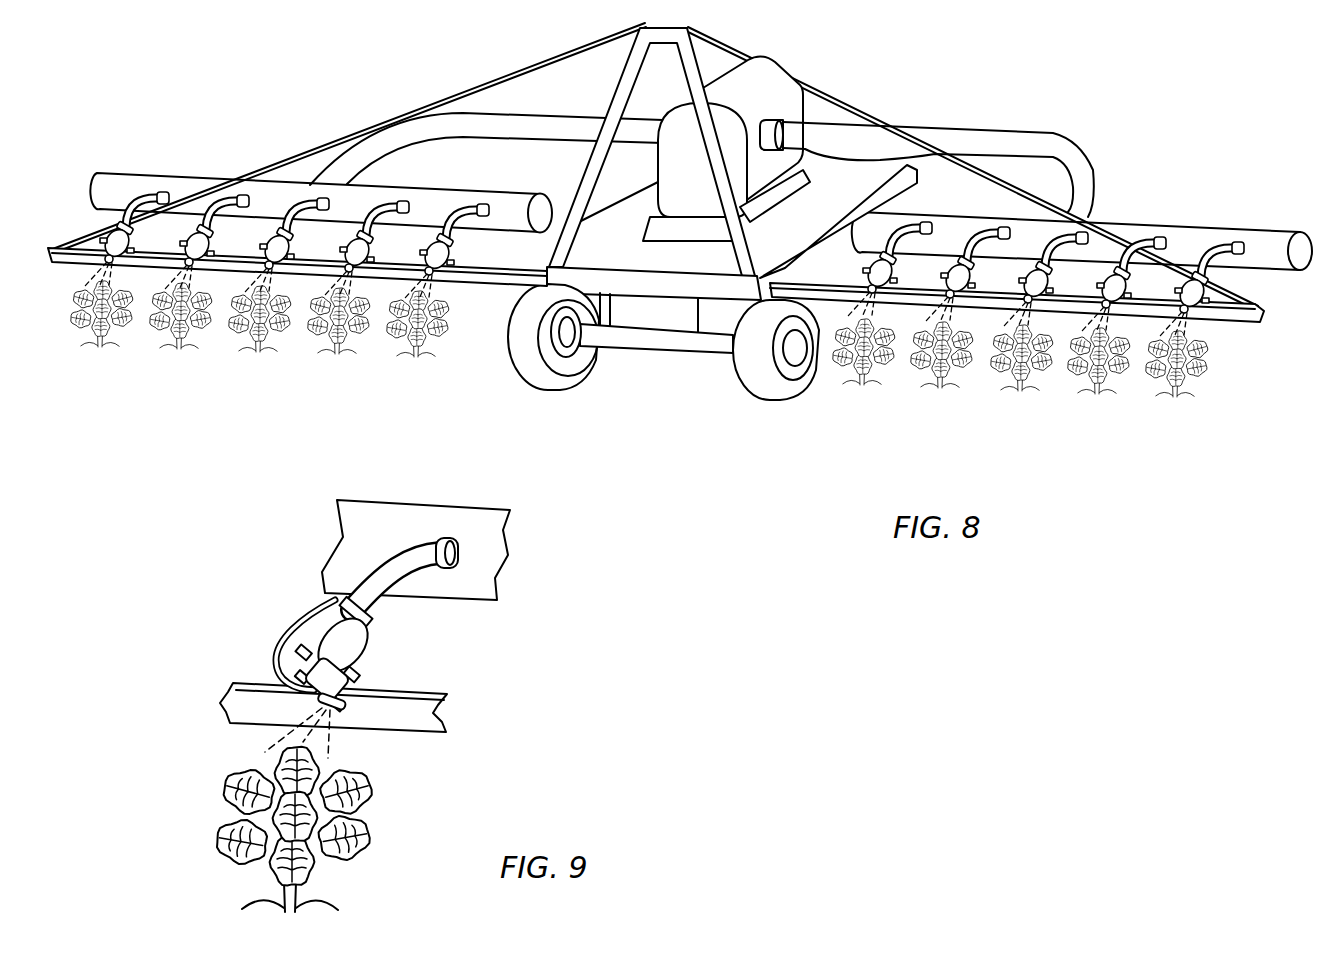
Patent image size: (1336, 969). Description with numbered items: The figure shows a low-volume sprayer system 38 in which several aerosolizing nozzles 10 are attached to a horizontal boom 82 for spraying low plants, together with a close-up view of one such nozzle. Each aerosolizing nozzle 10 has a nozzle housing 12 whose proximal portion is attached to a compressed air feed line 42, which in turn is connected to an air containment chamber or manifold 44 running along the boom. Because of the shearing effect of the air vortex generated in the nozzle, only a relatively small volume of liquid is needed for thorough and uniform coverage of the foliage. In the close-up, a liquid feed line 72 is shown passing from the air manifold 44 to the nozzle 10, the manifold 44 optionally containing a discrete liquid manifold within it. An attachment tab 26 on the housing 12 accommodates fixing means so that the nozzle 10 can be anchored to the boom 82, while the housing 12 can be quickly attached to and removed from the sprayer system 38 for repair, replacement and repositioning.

In FIG. 8, the sprayer system 38 is at (950, 97).
In FIG. 8, the air manifold 44 is at (1193, 224).
In FIG. 9, the air manifold 44 is at (432, 504).
In FIG. 8, the compressed air feed line 42 is at (458, 224).
In FIG. 9, the compressed air feed line 42 is at (417, 545).
In FIG. 8, the aerosolizing nozzle 10 is at (440, 272).
In FIG. 9, the aerosolizing nozzle 10 is at (302, 660).
In FIG. 8, the horizontal boom 82 is at (1225, 314).
In FIG. 9, the horizontal boom 82 is at (403, 733).
In FIG. 9, the liquid feed line 72 is at (323, 607).
In FIG. 9, the nozzle housing 12 is at (330, 680).
In FIG. 9, the attachment tab 26 is at (343, 708).